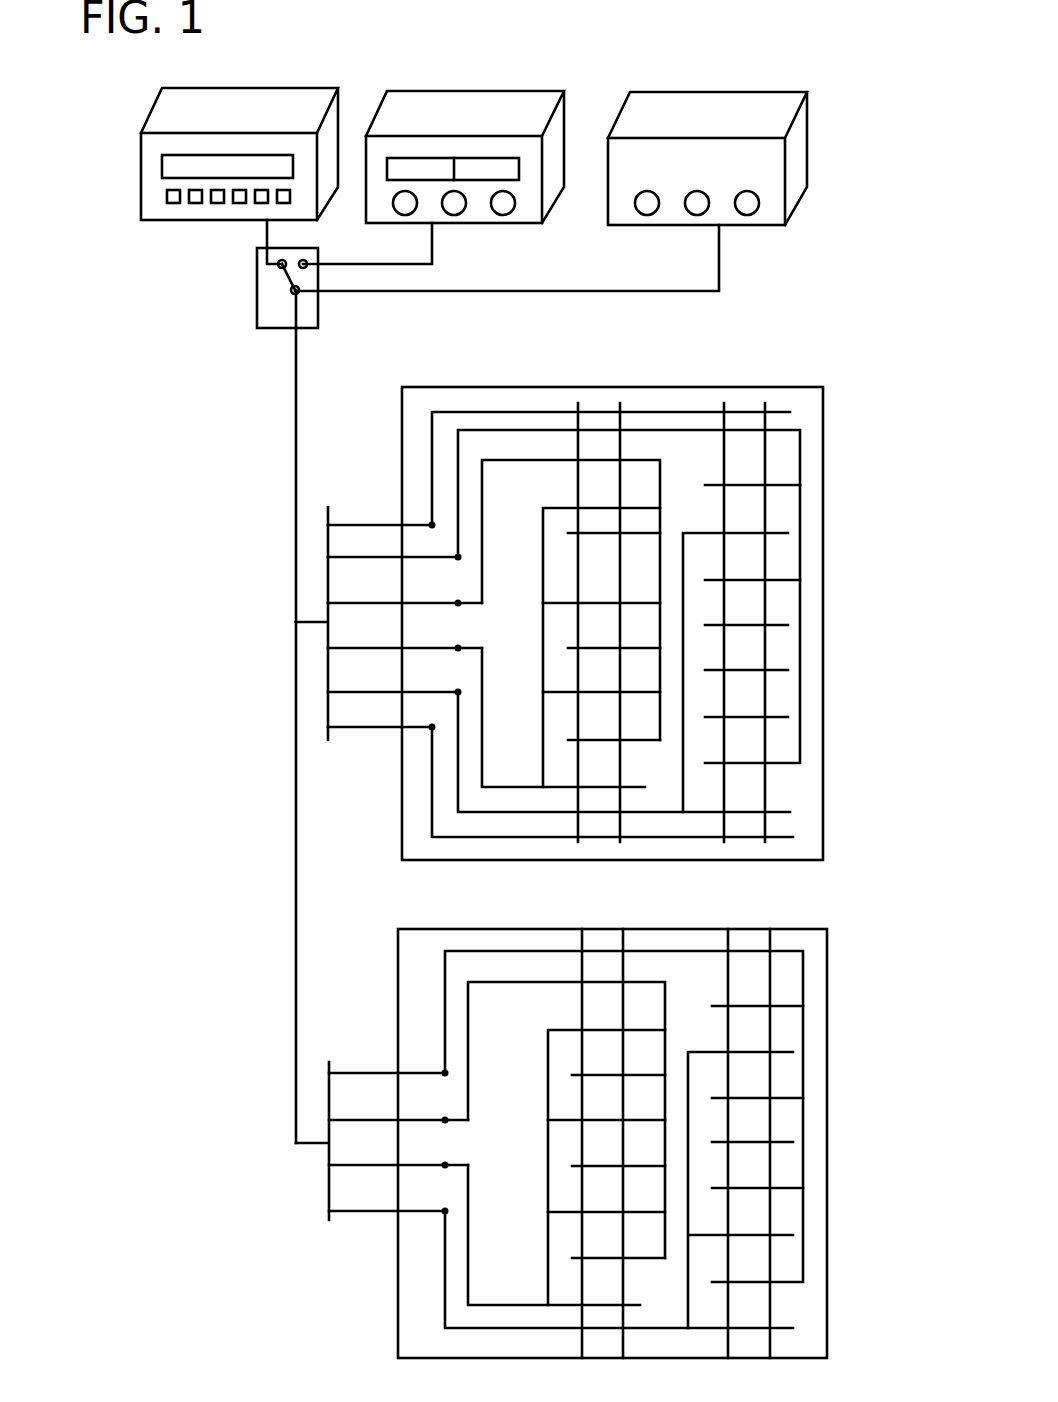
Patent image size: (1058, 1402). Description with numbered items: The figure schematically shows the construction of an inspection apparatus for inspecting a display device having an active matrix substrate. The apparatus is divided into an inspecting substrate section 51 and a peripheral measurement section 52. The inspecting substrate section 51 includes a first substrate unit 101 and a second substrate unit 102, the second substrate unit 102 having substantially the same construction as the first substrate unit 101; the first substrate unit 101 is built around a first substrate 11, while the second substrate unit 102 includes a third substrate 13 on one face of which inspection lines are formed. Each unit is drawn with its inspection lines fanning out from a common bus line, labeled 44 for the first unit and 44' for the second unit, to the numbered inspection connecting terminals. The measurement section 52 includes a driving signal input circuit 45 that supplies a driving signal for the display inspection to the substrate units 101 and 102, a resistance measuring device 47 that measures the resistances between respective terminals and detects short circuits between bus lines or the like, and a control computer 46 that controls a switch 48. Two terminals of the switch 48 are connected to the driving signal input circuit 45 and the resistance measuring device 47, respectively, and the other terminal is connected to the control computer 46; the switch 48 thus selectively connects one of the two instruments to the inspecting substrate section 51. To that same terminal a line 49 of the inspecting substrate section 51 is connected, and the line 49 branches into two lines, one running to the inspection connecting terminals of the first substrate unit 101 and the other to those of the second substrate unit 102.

The first substrate 11 is at (575, 1126).
The third substrate 13 is at (601, 589).
The bus line of first circuit board 44 is at (382, 1121).
The bus line of second circuit board 44' is at (389, 612).
The driving signal input circuit 45 is at (433, 151).
The control computer 46 is at (551, 167).
The resistance measuring device 47 is at (239, 128).
The switch 48 is at (257, 306).
The line 49 is at (296, 452).
The inspecting substrate section 51 is at (261, 882).
The measurement section 52 is at (185, 173).
The first substrate unit 101 is at (643, 1143).
The second substrate unit 102 is at (643, 623).